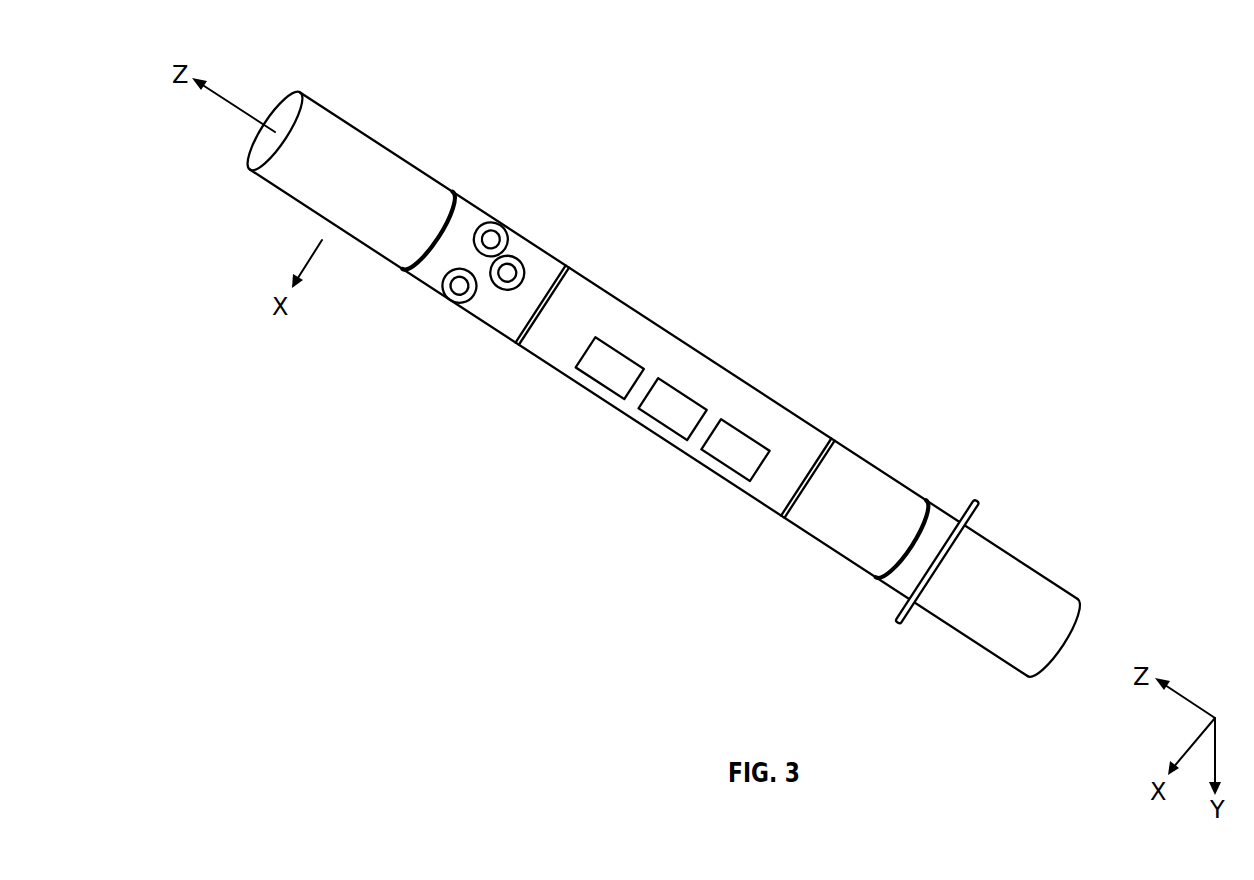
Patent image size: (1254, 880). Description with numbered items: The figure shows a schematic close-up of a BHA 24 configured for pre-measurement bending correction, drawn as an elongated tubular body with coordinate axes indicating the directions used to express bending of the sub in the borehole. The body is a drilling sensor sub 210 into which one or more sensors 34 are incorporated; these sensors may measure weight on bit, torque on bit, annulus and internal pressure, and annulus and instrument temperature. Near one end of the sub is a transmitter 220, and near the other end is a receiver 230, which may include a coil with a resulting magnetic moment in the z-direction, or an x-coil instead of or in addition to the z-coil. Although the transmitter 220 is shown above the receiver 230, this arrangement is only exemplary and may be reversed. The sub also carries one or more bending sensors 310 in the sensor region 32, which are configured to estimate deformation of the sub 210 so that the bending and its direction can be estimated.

The BHA 24 is at (568, 135).
The sensor section 32 is at (550, 225).
The sensors 34 is at (597, 385).
The drilling sensor sub 210 is at (702, 353).
The transmitter 220 is at (367, 146).
The receiver 230 is at (978, 500).
The bending sensors 310 is at (450, 303).